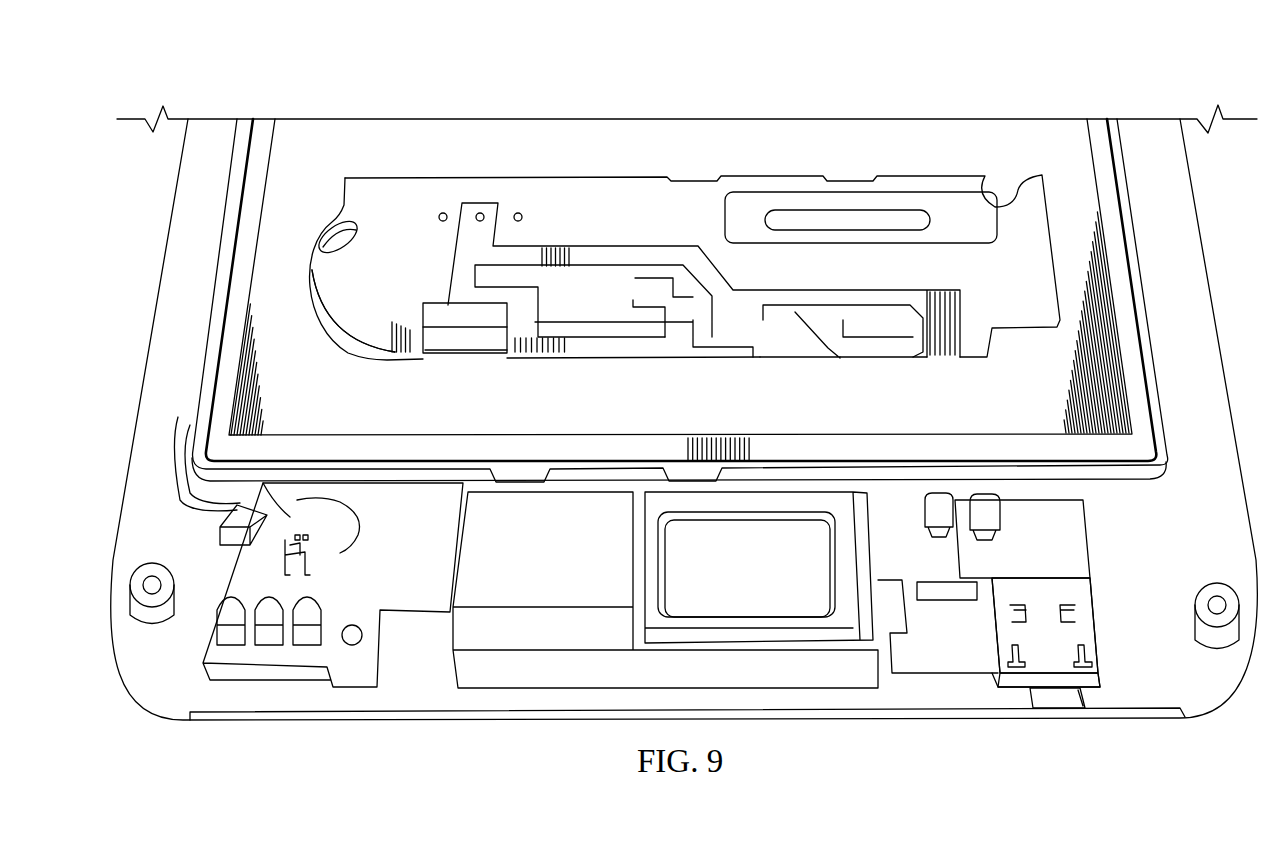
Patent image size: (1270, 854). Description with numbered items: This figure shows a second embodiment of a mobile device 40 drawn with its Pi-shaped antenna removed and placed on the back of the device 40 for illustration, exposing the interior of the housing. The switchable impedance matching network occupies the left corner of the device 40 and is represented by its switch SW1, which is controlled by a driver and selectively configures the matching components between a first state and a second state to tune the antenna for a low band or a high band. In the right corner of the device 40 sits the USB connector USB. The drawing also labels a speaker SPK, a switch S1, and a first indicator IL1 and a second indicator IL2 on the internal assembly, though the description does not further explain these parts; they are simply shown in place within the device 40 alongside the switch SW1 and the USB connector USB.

The device 40 is at (458, 81).
The second indicator light IL2 is at (340, 331).
The switch S1 is at (630, 295).
The first indicator light IL1 is at (822, 345).
The switch SW1 is at (326, 538).
The speaker SPK is at (850, 602).
The USB connector USB is at (1064, 733).